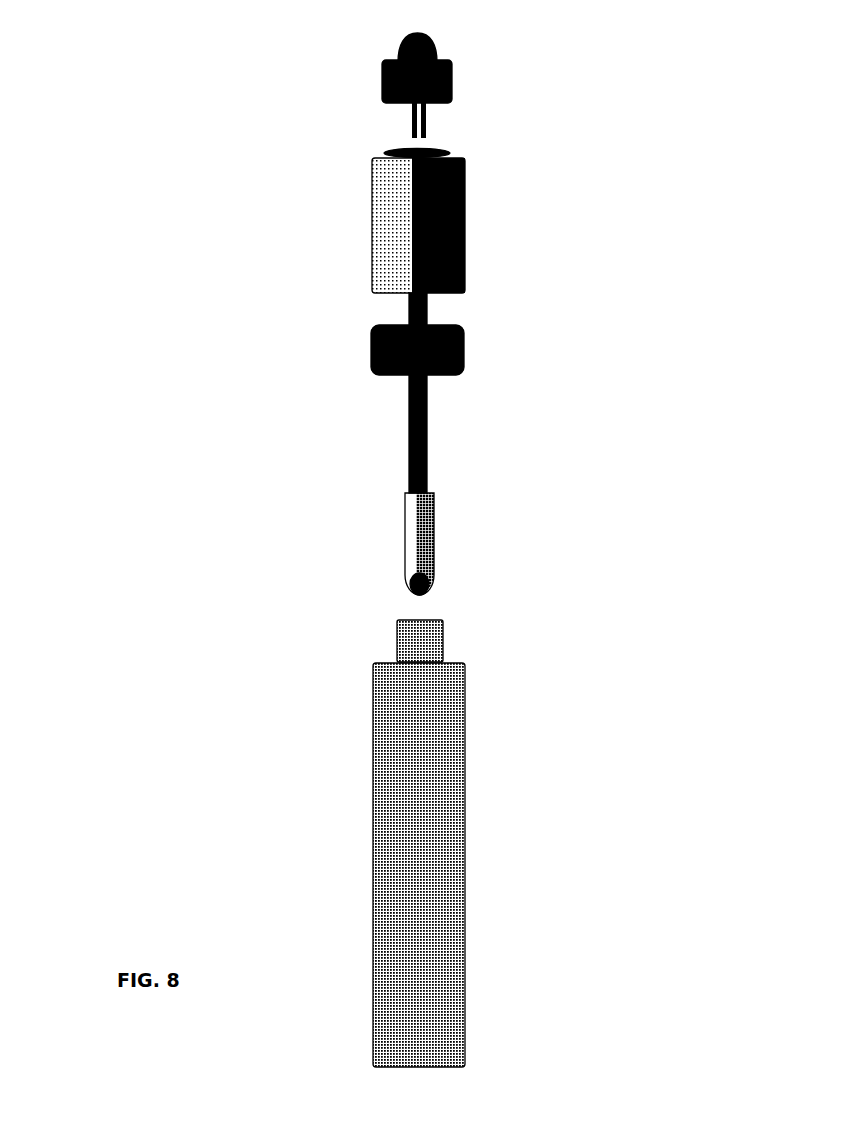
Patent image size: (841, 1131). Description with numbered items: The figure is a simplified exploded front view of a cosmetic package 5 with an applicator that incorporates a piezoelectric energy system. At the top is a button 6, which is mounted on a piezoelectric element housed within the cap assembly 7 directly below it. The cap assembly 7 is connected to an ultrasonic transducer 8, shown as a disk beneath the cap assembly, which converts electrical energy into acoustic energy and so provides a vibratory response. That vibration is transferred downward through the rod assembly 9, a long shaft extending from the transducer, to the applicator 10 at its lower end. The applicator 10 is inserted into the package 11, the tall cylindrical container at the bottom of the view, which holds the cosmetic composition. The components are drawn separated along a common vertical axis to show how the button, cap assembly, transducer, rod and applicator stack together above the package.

The cosmetic package 5 is at (445, 641).
The button 6 is at (375, 78).
The cap assembly 7 is at (362, 239).
The ultrasonic transducer 8 is at (358, 355).
The rod assembly 9 is at (431, 428).
The applicator 10 is at (400, 540).
The package 11 is at (375, 811).